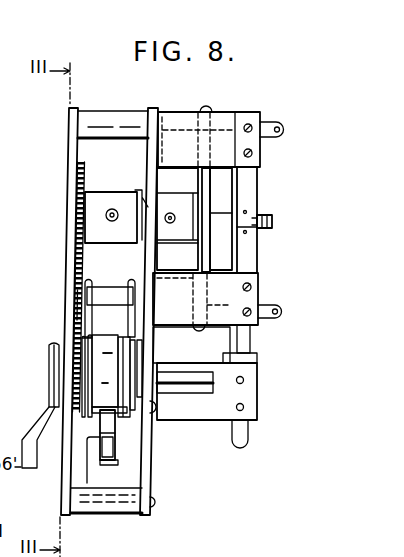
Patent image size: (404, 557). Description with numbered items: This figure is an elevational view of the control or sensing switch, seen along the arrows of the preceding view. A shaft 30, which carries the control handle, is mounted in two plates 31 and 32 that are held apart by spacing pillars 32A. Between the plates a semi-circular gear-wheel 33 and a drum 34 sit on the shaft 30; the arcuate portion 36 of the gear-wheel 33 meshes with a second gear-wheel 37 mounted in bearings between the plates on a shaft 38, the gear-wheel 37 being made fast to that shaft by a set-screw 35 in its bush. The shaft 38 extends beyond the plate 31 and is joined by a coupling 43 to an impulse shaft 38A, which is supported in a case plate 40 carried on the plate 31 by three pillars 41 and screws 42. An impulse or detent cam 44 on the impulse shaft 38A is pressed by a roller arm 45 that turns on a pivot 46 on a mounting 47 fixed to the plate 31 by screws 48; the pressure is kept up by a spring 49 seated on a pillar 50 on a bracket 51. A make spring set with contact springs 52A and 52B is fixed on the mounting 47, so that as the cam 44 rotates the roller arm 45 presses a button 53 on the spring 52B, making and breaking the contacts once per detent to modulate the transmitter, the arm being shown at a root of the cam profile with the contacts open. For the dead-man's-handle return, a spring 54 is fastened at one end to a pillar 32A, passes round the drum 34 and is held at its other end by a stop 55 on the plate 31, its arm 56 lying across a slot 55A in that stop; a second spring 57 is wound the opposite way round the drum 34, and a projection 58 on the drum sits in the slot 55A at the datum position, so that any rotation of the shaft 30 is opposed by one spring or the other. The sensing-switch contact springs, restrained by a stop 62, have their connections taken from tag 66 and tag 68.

The shaft 30 is at (100, 233).
The plate 31 is at (145, 462).
The plate 32 is at (53, 405).
The pillar 32A is at (122, 122).
The semi-circular gear-wheel 33 is at (105, 383).
The drum 34 is at (110, 353).
The set-screw 35 is at (111, 217).
The arcuate portion 36 is at (78, 303).
The second gear-wheel 37 is at (86, 167).
The shaft 38 is at (137, 191).
The impulse shaft 38A is at (285, 217).
The case plate 40 is at (217, 220).
The pillar 41 is at (190, 265).
The screw 42 is at (226, 268).
The coupling 43 is at (182, 207).
The impulse or detent cam 44 is at (272, 228).
The roller arm 45 is at (243, 342).
The pivot 46 is at (257, 358).
The mounting 47 is at (220, 408).
The screw 48 is at (186, 400).
The spring 49 is at (5, 244).
The pillar 50 is at (5, 207).
The bracket 51 is at (5, 179).
The contact spring 52A is at (12, 322).
The contact spring 52B is at (11, 296).
The button 53 is at (6, 271).
The spring 54 is at (88, 333).
The stop 55 is at (90, 467).
The slot 55A is at (102, 462).
The arm 56 is at (113, 448).
The second spring 57 is at (130, 330).
The projection 58 is at (115, 442).
The stop 62 is at (245, 212).
The tag 66 is at (278, 125).
The tag 68 is at (281, 306).